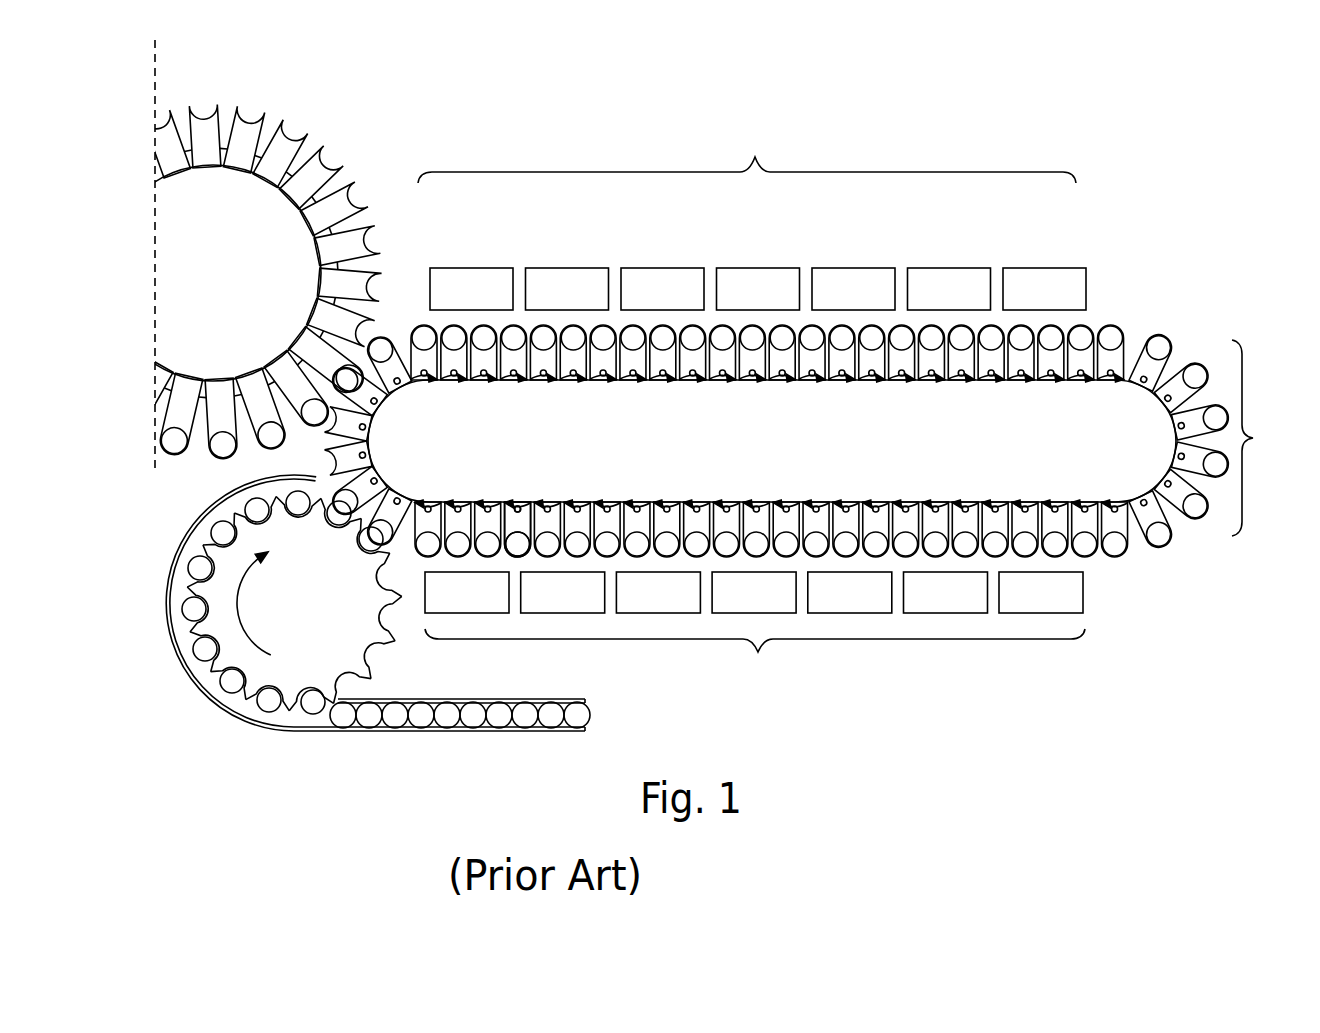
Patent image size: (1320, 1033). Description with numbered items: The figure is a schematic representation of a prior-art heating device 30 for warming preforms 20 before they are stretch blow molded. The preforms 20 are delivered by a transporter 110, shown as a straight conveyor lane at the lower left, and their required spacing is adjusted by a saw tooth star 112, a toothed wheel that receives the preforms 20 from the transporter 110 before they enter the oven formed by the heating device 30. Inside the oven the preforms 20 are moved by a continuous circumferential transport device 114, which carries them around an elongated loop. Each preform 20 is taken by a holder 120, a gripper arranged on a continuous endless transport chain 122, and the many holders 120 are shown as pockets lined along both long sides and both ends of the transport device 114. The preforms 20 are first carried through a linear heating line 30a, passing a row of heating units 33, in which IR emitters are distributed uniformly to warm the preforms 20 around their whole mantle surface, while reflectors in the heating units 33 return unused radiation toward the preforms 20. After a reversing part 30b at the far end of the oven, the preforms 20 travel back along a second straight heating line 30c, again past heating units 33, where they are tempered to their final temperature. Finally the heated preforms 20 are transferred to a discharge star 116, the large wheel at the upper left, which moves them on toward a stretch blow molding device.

The preforms 20 is at (475, 717).
The heating device 30 is at (817, 412).
The linear heating line 30a is at (755, 659).
The reversing part 30b is at (1271, 438).
The second straight heating line 30c is at (747, 155).
The heating units 33 is at (664, 284).
The transporter 110 is at (574, 731).
The saw tooth star 112 is at (335, 607).
The continuous circumferential transport device 114 is at (872, 452).
The discharge star 116 is at (240, 284).
The holder 120 is at (368, 424).
The continuous endless transport chain 122 is at (521, 501).